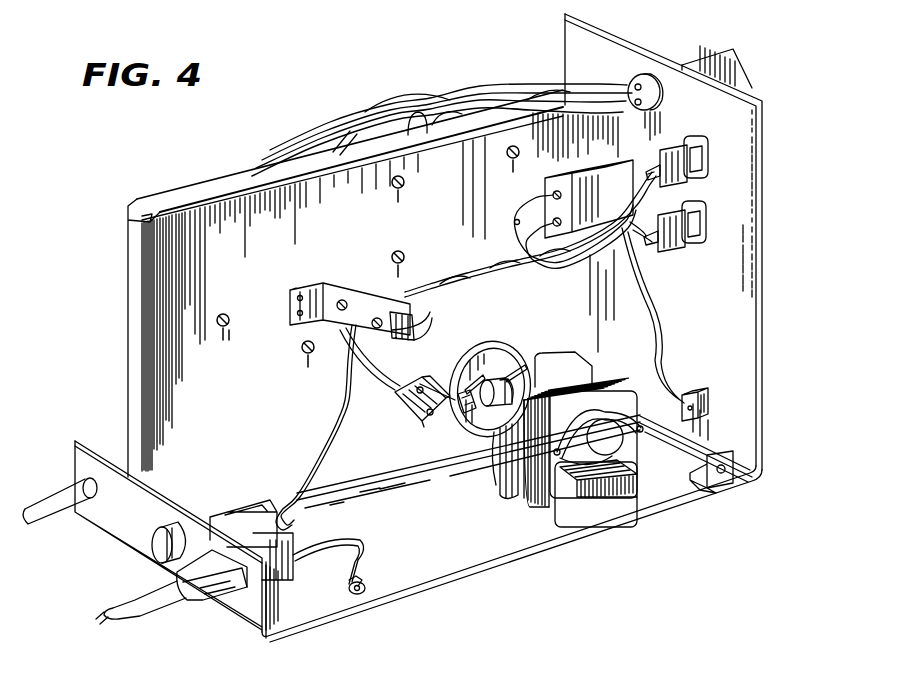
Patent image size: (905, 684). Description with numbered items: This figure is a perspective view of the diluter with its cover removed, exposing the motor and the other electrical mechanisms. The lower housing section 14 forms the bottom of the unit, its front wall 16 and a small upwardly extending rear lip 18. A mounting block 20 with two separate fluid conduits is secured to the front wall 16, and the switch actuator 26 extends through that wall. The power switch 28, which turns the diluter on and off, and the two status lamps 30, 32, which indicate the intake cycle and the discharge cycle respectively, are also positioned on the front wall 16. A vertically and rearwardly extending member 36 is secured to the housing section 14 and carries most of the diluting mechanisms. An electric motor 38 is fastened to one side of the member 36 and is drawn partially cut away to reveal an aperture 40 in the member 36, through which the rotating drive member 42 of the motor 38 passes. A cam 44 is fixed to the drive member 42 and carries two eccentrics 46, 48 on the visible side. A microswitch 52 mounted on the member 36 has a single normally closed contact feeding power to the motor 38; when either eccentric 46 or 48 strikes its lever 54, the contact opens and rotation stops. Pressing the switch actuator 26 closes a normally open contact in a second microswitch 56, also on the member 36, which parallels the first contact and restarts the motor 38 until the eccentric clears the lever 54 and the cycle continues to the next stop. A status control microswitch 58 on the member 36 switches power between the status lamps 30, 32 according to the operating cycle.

The housing section 14 is at (497, 546).
The front wall 16 is at (762, 246).
The rear lip 18 is at (122, 522).
The mounting block 20 is at (700, 63).
The switch actuator 26 is at (608, 166).
The power switch 28 is at (700, 388).
The status lamp 30 is at (686, 145).
The status lamp 32 is at (700, 210).
The vertically and rearwardly extending member 36 is at (128, 292).
The electric motor 38 is at (524, 492).
The aperture 40 is at (505, 350).
The rotating drive member 42 is at (498, 440).
The cam 44 is at (484, 352).
The eccentric 46 is at (464, 374).
The eccentric 48 is at (524, 362).
The microswitch 52 is at (412, 424).
The lever 54 is at (458, 410).
The microswitch 56 is at (560, 184).
The status control microswitch 58 is at (370, 287).